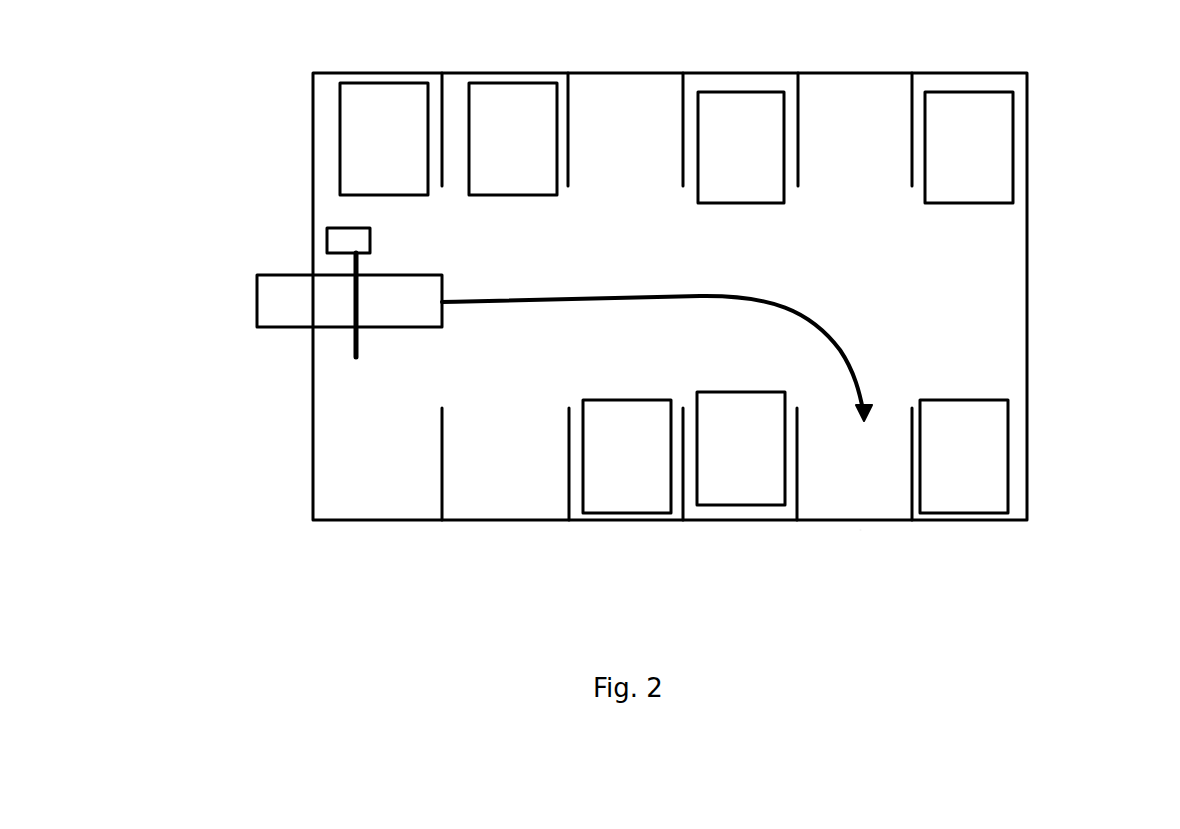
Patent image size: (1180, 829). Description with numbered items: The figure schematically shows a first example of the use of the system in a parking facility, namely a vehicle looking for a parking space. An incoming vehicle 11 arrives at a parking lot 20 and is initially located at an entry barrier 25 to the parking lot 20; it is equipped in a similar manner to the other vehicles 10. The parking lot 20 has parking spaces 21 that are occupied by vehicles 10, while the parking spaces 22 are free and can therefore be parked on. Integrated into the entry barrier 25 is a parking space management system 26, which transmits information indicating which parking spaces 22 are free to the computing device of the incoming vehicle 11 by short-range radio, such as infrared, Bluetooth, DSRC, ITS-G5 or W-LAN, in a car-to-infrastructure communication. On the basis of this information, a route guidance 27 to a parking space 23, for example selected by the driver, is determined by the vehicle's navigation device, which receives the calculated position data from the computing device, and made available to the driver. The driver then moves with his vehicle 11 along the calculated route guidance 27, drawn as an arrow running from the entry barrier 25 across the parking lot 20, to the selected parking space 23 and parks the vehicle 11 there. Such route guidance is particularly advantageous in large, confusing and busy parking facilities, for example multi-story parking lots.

The vehicle 10 is at (370, 113).
The incoming vehicle 11 is at (275, 303).
The parking lot 20 is at (963, 280).
The parking spaces 21 is at (328, 162).
The parking spaces 22 is at (625, 105).
The parking space 23 is at (900, 561).
The entry barrier 25 is at (353, 335).
The parking space management system 26 is at (348, 235).
The route guidance 27 is at (840, 349).